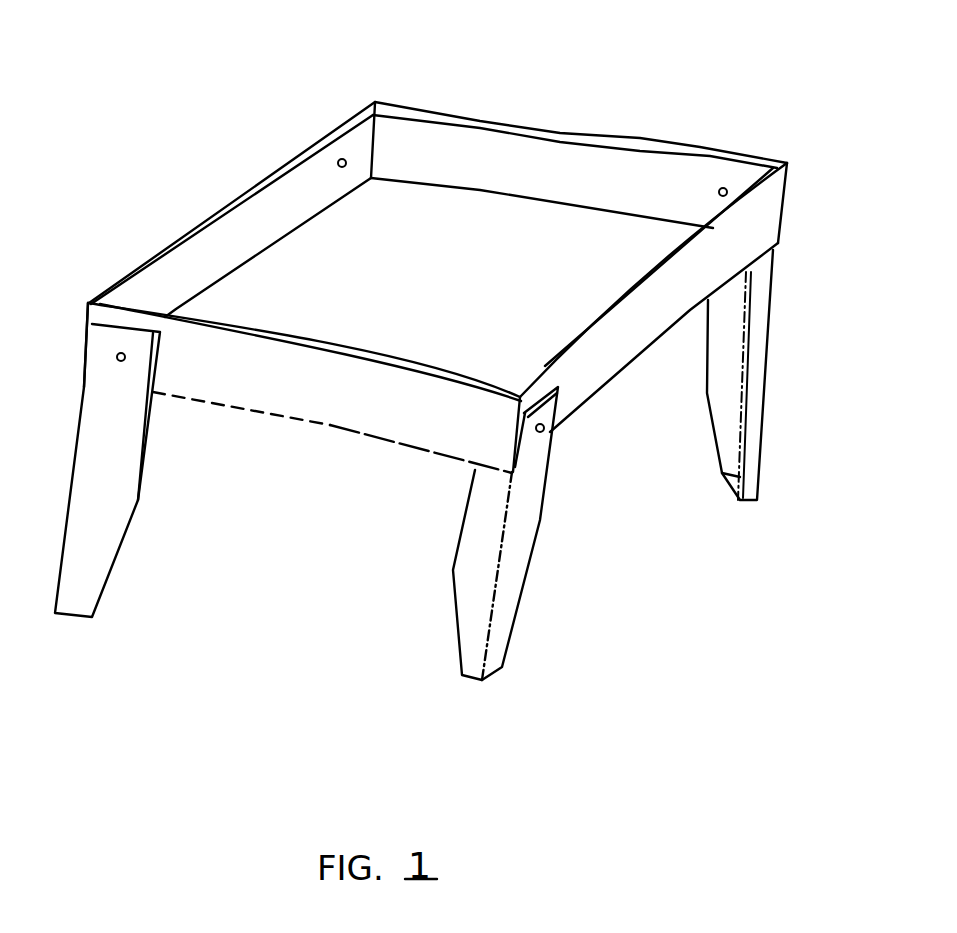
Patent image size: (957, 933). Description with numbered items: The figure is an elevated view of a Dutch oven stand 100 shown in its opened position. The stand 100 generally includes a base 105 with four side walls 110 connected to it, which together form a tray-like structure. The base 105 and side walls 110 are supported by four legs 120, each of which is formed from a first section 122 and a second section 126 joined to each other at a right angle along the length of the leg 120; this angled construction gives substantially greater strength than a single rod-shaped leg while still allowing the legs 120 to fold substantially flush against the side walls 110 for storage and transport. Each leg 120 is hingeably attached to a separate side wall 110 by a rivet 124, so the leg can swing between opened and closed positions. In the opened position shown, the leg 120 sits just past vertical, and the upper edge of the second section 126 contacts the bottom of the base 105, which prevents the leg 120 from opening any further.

The stand 100 is at (471, 401).
The base 105 is at (453, 291).
The side walls 110 is at (413, 130).
The legs 120 is at (476, 465).
The first section 122 is at (535, 518).
The rivet 124 is at (339, 160).
The second section 126 is at (462, 512).